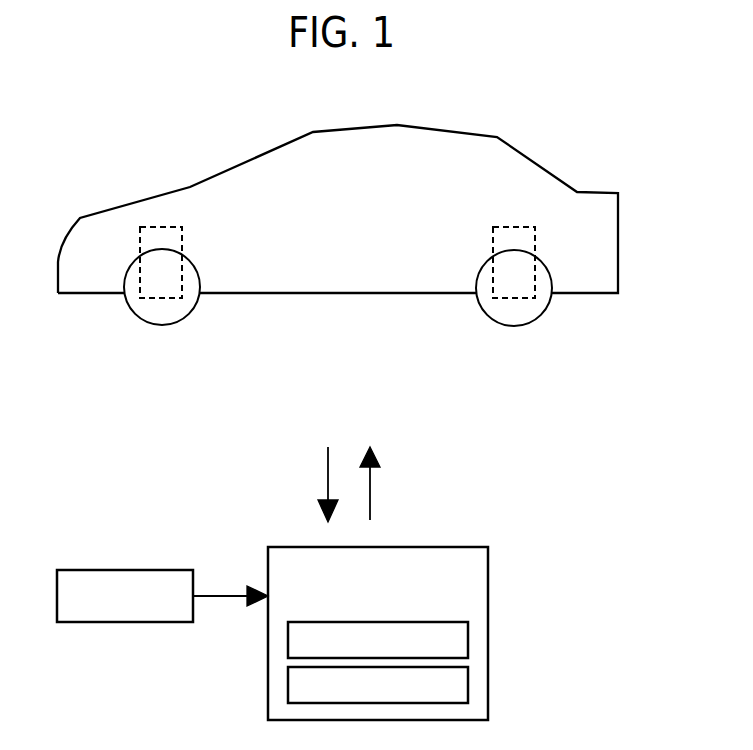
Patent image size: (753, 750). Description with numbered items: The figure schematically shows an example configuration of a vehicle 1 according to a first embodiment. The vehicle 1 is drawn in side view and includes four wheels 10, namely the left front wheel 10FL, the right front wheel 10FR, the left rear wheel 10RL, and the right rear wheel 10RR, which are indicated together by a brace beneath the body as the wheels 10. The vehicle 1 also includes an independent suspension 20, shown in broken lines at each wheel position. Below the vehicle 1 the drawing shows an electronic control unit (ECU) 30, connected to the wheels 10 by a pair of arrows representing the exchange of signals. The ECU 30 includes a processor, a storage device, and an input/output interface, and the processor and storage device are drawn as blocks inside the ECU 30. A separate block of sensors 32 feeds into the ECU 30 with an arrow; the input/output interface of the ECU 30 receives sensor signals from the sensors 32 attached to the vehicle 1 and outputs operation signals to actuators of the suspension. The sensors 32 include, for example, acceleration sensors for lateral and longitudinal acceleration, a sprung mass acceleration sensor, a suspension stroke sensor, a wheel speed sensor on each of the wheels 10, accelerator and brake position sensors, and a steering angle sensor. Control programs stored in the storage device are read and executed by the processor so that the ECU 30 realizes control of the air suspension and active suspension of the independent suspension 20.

The vehicle 1 is at (596, 124).
The wheels 10 is at (338, 341).
The right front wheel 10FR is at (228, 308).
The left front wheel 10FL is at (193, 317).
The right rear wheel 10RR is at (466, 309).
The left rear wheel 10RL is at (466, 309).
The independent suspension 20 is at (157, 227).
The electronic control unit (ECU) 30 is at (437, 547).
The sensors 32 is at (123, 570).